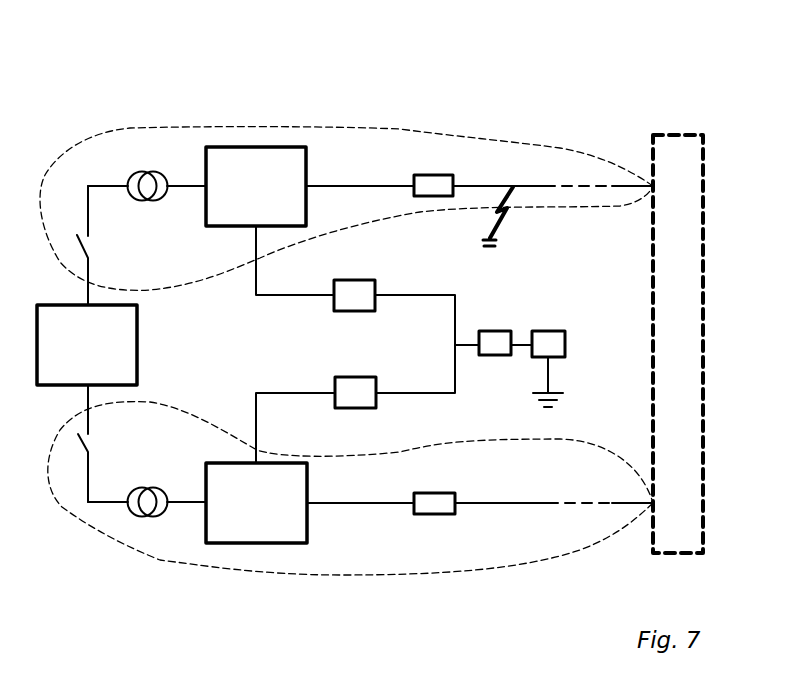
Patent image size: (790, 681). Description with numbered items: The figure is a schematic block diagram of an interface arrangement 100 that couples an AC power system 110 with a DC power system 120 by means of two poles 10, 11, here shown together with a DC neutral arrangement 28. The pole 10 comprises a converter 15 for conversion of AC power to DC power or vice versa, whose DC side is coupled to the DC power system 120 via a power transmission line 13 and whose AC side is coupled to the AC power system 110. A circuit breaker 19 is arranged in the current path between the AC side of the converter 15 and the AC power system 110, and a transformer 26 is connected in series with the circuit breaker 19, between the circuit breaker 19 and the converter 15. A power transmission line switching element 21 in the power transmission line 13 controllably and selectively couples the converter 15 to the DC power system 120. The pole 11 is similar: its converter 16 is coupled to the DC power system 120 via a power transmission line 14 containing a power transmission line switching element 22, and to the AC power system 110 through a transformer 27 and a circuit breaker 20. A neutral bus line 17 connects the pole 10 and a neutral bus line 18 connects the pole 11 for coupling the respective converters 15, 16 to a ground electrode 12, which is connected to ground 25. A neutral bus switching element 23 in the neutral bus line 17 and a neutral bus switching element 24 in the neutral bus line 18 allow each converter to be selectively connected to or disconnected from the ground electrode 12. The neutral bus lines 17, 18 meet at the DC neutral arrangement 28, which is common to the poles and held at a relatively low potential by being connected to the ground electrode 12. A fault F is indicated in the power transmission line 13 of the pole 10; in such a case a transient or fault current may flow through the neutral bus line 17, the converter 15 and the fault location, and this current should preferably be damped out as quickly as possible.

The interface arrangement 100 is at (317, 97).
The pole 10 is at (575, 140).
The pole 11 is at (160, 550).
The DC power system 120 is at (668, 135).
The AC power system 110 is at (138, 338).
The converter 15 is at (230, 226).
The converter 16 is at (307, 525).
The power transmission line 13 is at (362, 186).
The power transmission line 14 is at (342, 503).
The neutral bus line 17 is at (283, 293).
The neutral bus line 18 is at (449, 383).
The circuit breaker 19 is at (92, 245).
The circuit breaker 20 is at (90, 445).
The power transmission line switching element 21 is at (433, 197).
The power transmission line switching element 22 is at (435, 493).
The neutral bus switching element 23 is at (360, 279).
The neutral bus switching element 24 is at (357, 409).
The ground 25 is at (567, 395).
The transformer 26 is at (152, 206).
The transformer 27 is at (148, 482).
The DC neutral arrangement 28 is at (493, 355).
The ground electrode 12 is at (565, 337).
The fault F is at (508, 220).